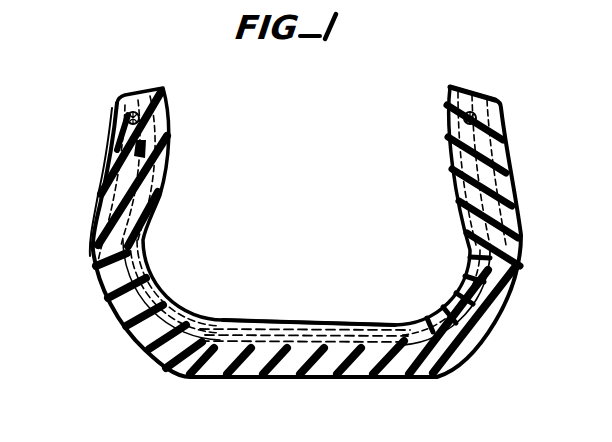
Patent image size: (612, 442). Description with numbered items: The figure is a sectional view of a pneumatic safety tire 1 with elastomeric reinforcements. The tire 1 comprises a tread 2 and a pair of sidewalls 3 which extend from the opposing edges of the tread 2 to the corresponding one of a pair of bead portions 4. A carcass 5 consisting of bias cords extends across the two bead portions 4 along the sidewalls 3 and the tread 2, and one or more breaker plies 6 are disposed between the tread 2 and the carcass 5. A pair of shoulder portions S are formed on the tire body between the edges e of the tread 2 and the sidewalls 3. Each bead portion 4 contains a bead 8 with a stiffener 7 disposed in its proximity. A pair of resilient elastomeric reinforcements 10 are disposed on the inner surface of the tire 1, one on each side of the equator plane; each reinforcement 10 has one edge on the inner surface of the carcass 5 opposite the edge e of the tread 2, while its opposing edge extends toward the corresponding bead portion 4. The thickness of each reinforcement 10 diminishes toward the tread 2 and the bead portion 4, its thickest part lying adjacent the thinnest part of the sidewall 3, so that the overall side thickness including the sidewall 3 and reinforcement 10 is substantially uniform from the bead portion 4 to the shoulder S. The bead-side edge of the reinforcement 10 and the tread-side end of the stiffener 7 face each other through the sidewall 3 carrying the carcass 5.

The pneumatic safety tire 1 is at (508, 131).
The tread 2 is at (381, 383).
The sidewall 3 is at (93, 233).
The bead portion 4 is at (117, 157).
The carcass 5 is at (103, 277).
The breaker ply 6 is at (230, 347).
The stiffener 7 is at (110, 193).
The bead 8 is at (117, 113).
The elastomeric reinforcement 10 is at (135, 268).
The shoulder portion S is at (127, 330).
The edge of the tread e is at (167, 373).